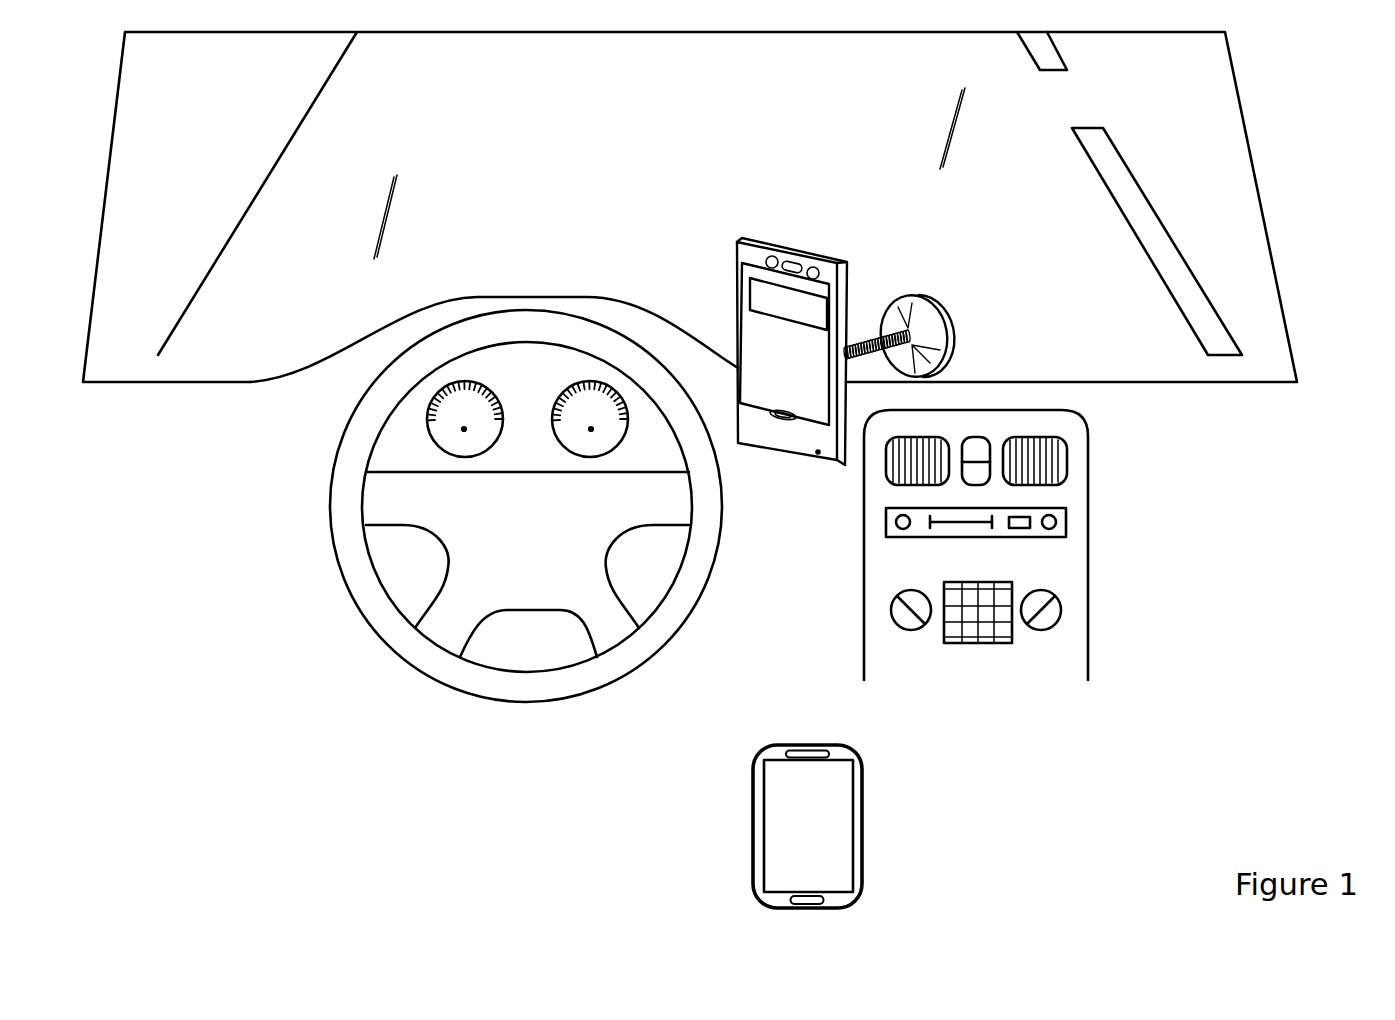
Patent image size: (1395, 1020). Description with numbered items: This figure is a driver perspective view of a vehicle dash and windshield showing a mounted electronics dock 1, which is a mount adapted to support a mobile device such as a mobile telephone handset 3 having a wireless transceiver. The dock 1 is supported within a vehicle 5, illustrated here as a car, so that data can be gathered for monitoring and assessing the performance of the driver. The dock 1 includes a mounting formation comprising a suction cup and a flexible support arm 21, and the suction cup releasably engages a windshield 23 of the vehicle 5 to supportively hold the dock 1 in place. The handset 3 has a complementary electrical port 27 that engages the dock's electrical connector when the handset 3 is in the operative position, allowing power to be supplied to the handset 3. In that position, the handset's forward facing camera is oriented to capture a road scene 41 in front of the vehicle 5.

The road scene 41 is at (665, 106).
The vehicle 5 is at (298, 362).
The electronics dock 1 is at (763, 240).
The flexible support arm 21 is at (927, 308).
The windshield 23 is at (1268, 320).
The mobile telephone handset 3 is at (821, 828).
The electrical port 27 is at (812, 912).